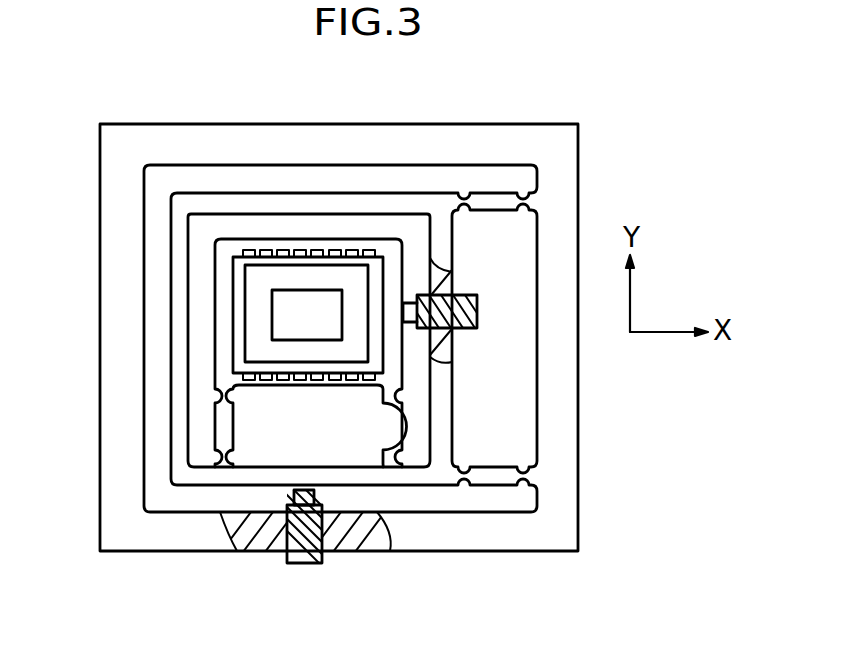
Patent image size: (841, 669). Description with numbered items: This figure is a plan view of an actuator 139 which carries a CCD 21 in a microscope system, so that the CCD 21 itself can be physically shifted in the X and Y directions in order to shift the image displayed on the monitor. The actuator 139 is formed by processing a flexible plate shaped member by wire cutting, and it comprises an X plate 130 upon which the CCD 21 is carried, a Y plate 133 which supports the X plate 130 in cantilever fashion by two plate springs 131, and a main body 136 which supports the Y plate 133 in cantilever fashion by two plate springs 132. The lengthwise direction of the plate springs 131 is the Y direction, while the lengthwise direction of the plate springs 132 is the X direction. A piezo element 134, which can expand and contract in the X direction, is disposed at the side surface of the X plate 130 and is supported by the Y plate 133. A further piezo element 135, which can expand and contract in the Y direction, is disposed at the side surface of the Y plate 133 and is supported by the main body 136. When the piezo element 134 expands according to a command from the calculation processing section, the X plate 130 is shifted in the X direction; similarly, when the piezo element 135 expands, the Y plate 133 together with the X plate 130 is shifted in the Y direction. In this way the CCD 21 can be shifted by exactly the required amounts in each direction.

The CCD 21 is at (240, 310).
The X plate 130 is at (305, 250).
The plate springs 131 is at (222, 421).
The plate springs 132 is at (493, 205).
The Y plate 133 is at (188, 486).
The piezo element 134 is at (461, 294).
The piezo element 135 is at (306, 556).
The main body 136 is at (567, 516).
The actuator 139 is at (606, 129).